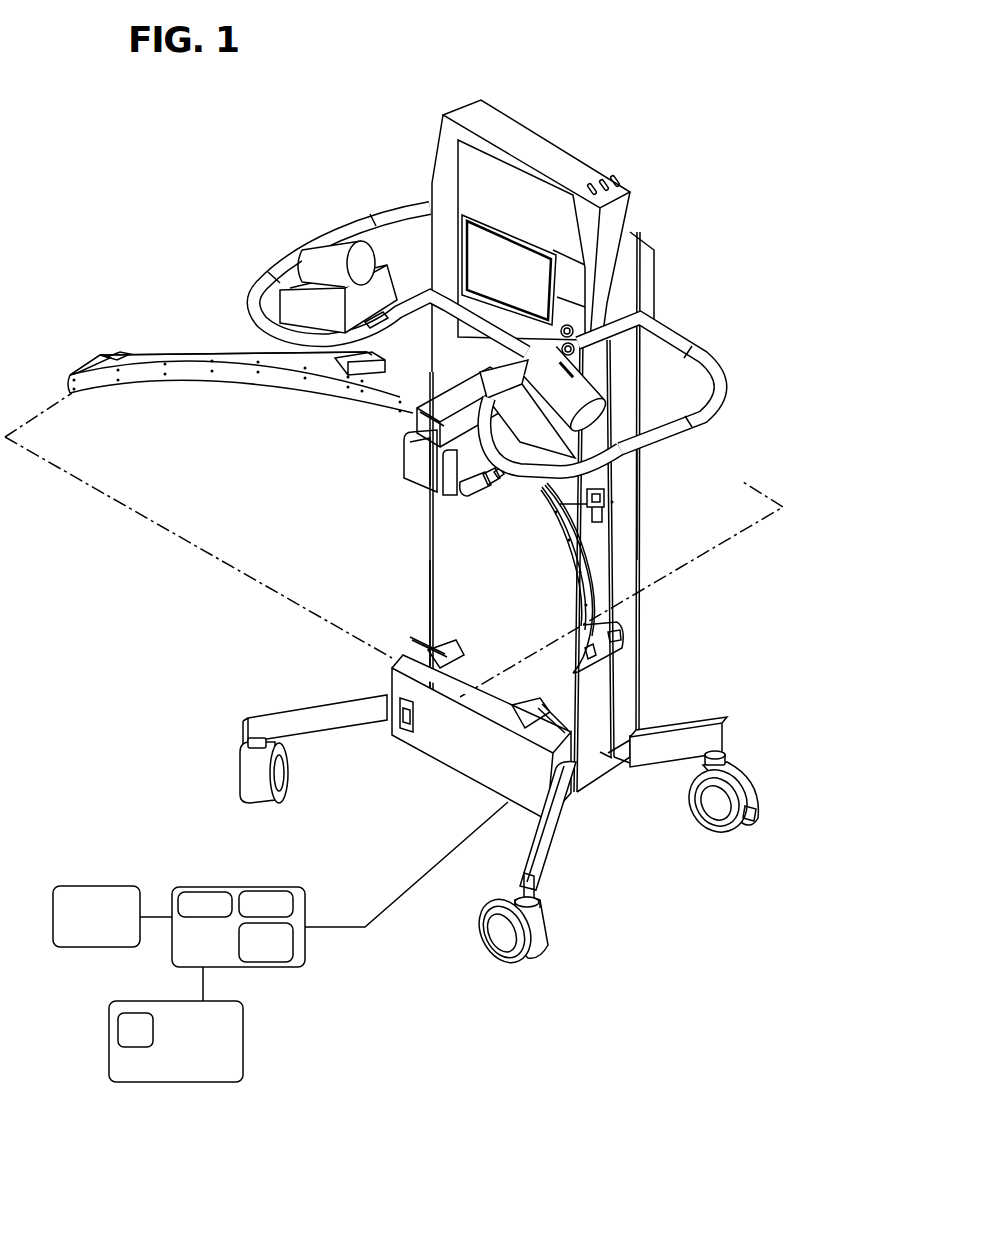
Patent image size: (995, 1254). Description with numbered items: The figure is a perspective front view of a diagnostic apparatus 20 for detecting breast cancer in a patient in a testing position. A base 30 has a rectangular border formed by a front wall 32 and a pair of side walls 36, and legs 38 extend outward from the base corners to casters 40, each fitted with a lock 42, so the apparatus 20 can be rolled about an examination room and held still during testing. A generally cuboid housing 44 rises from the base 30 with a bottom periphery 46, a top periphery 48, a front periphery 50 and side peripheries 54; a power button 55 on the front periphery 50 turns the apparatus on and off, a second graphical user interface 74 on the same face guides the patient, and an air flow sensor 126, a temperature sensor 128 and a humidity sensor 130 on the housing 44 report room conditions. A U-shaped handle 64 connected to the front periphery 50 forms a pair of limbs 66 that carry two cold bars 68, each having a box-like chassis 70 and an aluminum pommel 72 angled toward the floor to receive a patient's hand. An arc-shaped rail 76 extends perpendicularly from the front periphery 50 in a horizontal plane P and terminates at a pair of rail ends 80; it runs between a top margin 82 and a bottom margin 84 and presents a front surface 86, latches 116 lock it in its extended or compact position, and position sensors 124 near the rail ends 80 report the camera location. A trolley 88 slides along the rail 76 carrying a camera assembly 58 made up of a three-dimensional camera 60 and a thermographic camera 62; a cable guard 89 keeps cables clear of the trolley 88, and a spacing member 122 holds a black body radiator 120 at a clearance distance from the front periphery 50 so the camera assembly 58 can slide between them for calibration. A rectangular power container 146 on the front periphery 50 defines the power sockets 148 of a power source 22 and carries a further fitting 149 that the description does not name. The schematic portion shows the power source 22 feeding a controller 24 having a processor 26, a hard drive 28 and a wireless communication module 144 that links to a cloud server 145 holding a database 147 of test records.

The diagnostic apparatus 20 is at (672, 84).
The power source 22 is at (112, 916).
The controller 24 is at (340, 901).
The processor 26 is at (266, 904).
The hard drive 28 is at (266, 942).
The base 30 is at (491, 832).
The front wall 32 is at (566, 835).
The side walls 36 is at (637, 775).
The legs 38 is at (298, 722).
The caster 40 is at (250, 772).
The lock 42 is at (750, 820).
The housing 44 is at (644, 560).
The bottom periphery 46 is at (632, 740).
The top periphery 48 is at (473, 112).
The front periphery 50 is at (428, 578).
The side peripheries 54 is at (622, 497).
The power button 55 is at (576, 333).
The camera assembly 58 is at (488, 494).
The three-dimensional camera 60 is at (450, 490).
The thermographic camera 62 is at (466, 486).
The handle 64 is at (530, 328).
The limbs 66 is at (388, 324).
The cold bars 68 is at (310, 238).
The chassis 70 is at (285, 305).
The pommel 72 is at (305, 258).
The second graphical user interface 74 is at (527, 270).
The arc-shaped rail 76 is at (205, 392).
The rail ends 80 is at (367, 477).
The top margin 82 is at (133, 352).
The bottom margin 84 is at (128, 398).
The front surface 86 is at (176, 392).
The trolley 88 is at (501, 480).
The cable guard 89 is at (428, 335).
The latches 116 is at (350, 364).
The black body radiator 120 is at (398, 452).
The spacing member 122 is at (448, 404).
The position sensors 124 is at (117, 352).
The air flow sensor 126 is at (619, 178).
The temperature sensor 128 is at (605, 178).
The humidity sensor 130 is at (590, 182).
The wireless communication module 144 is at (203, 898).
The cloud server 145 is at (176, 1041).
The power container 146 is at (462, 762).
The database 147 is at (112, 1028).
The power sockets 148 is at (418, 716).
The connector lever 149 is at (446, 656).
The horizontal plane P is at (150, 522).